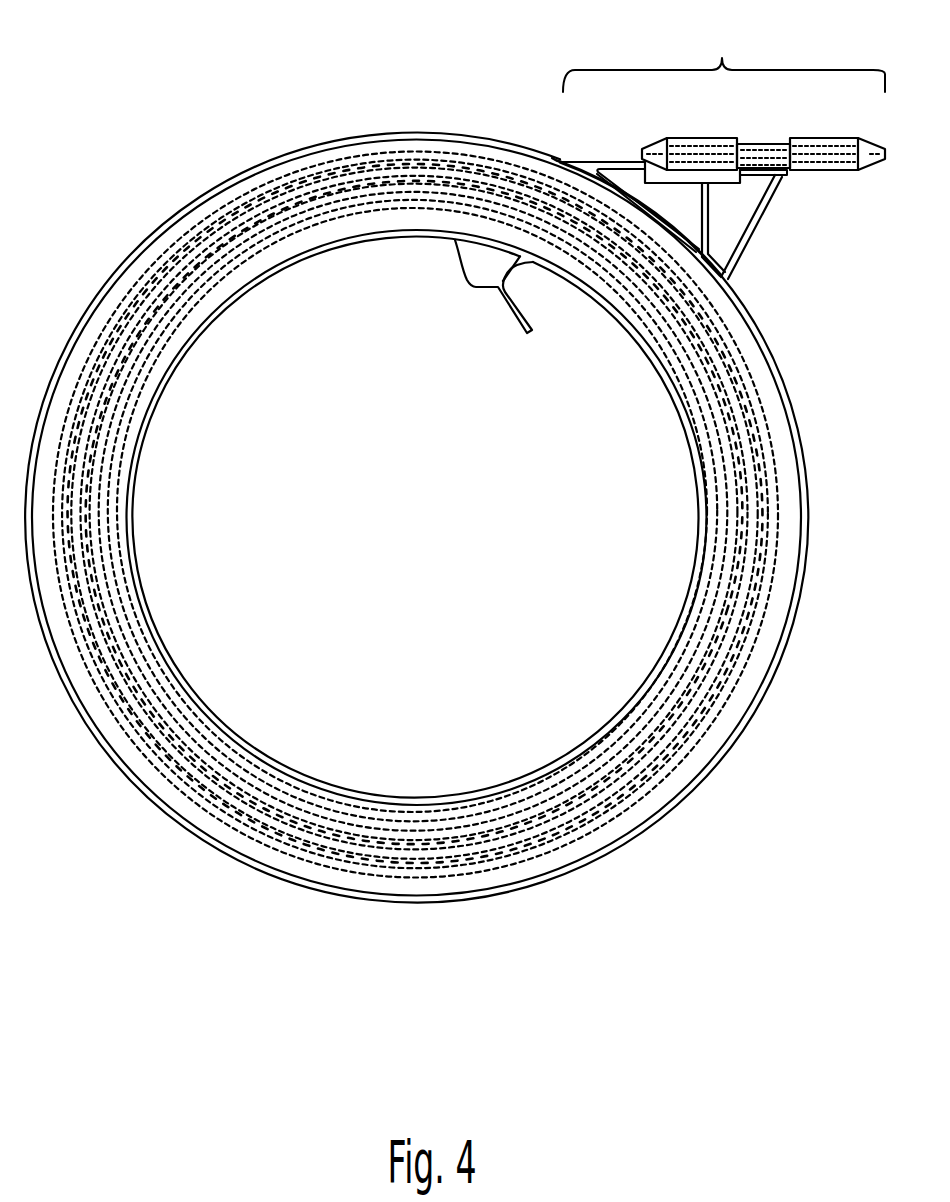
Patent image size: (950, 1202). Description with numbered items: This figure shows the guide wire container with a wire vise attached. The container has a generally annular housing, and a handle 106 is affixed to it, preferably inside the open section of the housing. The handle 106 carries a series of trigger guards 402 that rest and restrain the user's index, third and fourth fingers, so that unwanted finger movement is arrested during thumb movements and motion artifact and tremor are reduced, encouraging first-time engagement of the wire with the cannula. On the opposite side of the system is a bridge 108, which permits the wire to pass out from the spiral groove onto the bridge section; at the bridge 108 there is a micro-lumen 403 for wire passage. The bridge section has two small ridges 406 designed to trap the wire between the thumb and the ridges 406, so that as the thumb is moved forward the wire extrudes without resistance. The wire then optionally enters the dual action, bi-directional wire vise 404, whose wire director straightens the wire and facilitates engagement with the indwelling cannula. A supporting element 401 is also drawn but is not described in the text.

The handle 106 is at (458, 298).
The bridge 108 is at (726, 142).
The support bracket 401 is at (753, 238).
The trigger guards 402 is at (527, 302).
The micro-lumen 403 is at (560, 163).
The wire vise 404 is at (827, 177).
The ridges 406 is at (580, 162).